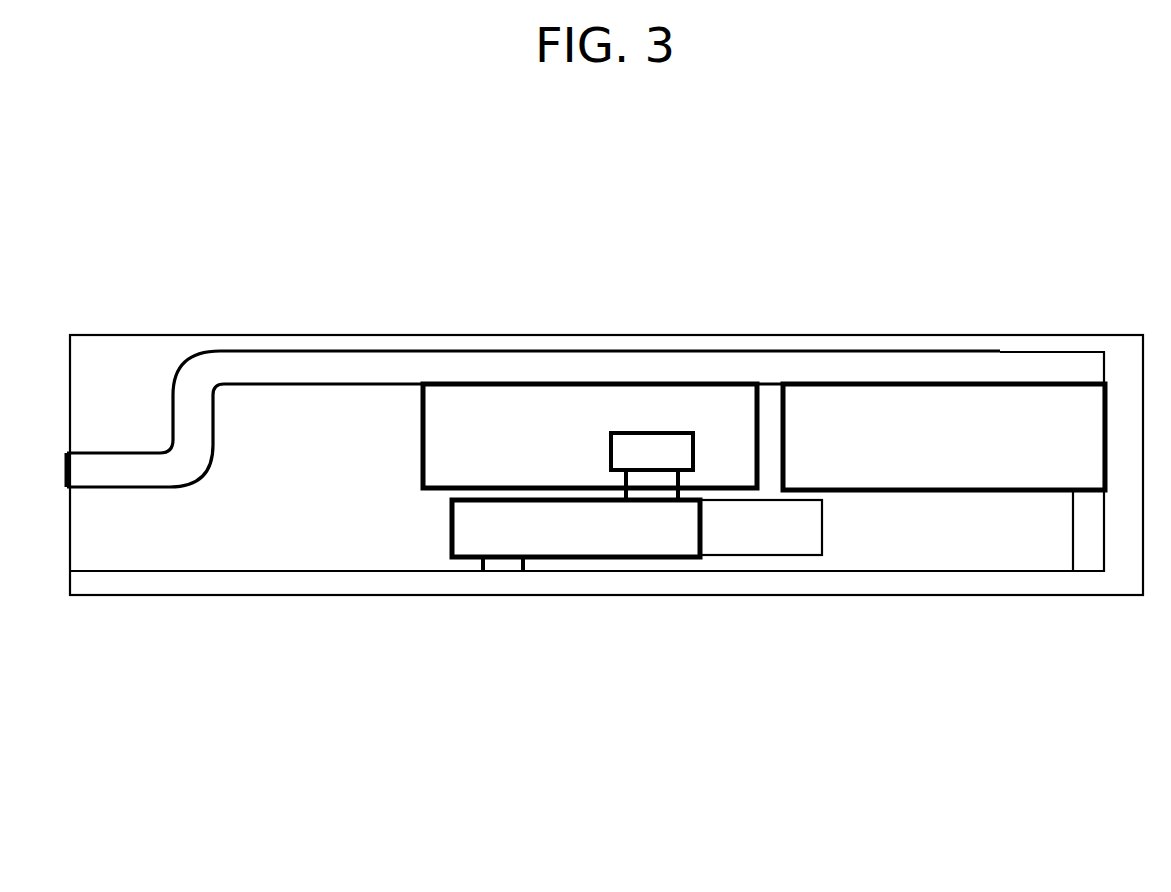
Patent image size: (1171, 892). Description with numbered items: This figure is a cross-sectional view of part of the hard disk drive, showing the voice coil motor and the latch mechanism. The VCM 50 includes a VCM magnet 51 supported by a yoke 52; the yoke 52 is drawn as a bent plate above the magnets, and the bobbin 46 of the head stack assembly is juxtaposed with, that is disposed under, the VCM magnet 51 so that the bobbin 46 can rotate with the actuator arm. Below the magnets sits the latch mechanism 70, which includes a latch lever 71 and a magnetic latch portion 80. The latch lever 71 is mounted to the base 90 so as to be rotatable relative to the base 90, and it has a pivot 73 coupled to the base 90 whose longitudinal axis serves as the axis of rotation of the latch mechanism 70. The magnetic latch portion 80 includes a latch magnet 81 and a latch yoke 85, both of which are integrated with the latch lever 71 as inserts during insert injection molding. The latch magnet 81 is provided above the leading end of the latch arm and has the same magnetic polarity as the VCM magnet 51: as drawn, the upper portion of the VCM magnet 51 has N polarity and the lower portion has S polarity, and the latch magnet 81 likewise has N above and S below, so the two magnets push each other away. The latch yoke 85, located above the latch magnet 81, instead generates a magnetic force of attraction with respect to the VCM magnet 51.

The bobbin 46 is at (798, 540).
The VCM 50 is at (999, 352).
The VCM magnet 51 is at (896, 400).
The yoke 52 is at (372, 372).
The latch mechanism 70 is at (607, 651).
The latch lever 71 is at (578, 558).
The pivot 73 is at (500, 568).
The magnetic latch portion 80 is at (686, 619).
The latch magnet 81 is at (660, 488).
The latch yoke 85 is at (683, 450).
The base 90 is at (965, 583).